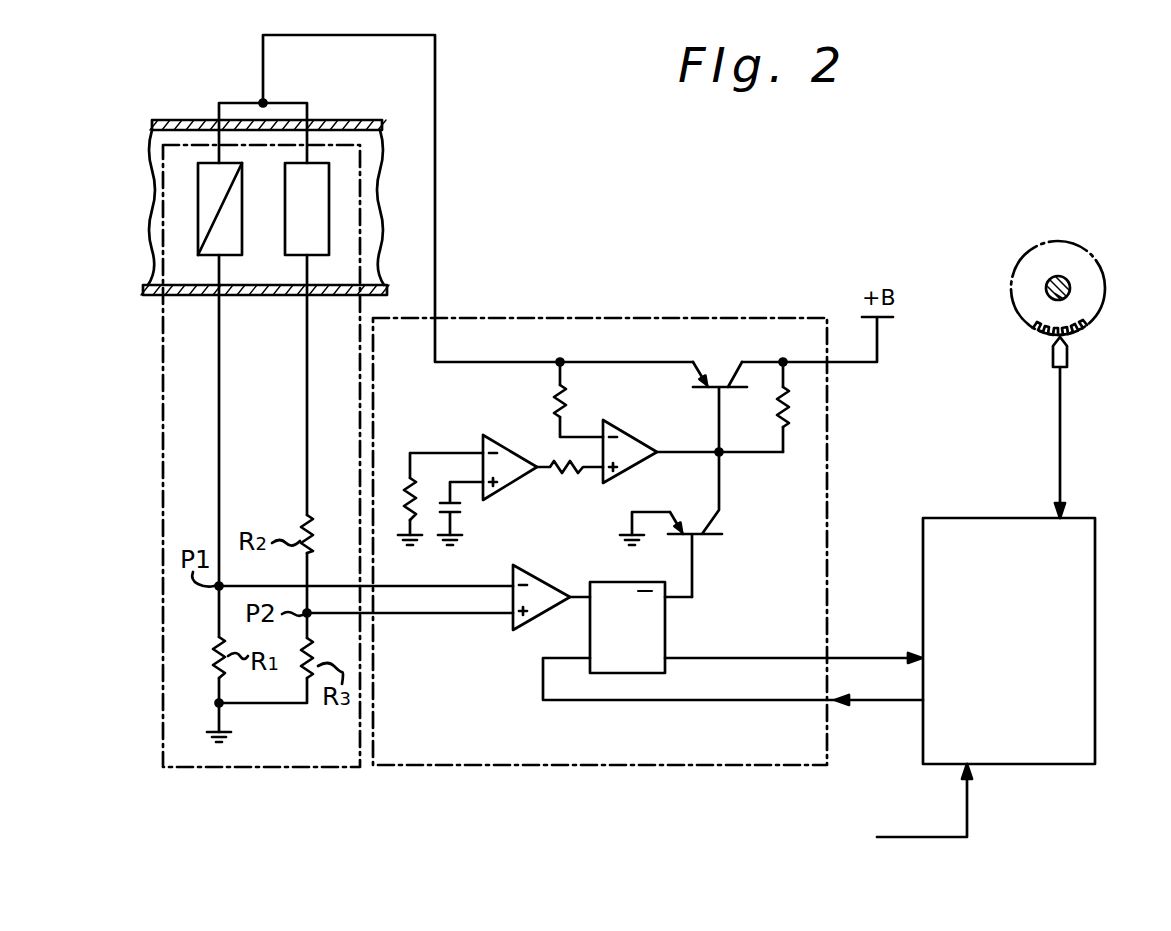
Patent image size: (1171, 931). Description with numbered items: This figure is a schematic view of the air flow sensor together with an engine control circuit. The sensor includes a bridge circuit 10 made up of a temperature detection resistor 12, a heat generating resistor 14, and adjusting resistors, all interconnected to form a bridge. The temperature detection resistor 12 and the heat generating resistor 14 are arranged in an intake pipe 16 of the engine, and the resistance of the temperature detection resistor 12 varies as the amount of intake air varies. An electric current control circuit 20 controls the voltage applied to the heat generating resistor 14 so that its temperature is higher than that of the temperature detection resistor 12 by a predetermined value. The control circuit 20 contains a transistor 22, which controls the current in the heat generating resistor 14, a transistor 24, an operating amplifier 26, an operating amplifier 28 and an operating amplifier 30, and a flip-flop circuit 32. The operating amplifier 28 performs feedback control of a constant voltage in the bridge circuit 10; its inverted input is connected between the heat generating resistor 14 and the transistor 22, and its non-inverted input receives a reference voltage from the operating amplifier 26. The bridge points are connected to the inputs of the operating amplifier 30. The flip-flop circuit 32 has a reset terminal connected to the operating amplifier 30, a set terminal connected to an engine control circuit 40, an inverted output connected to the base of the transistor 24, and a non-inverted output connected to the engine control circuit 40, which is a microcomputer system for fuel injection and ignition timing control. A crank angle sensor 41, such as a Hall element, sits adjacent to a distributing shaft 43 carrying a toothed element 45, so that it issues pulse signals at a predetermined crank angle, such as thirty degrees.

The bridge circuit 10 is at (163, 712).
The temperature detection resistor 12 is at (198, 212).
The heat generating resistor 14 is at (329, 210).
The intake pipe 16 is at (340, 120).
The electric current control circuit 20 is at (567, 765).
The transistor 22 is at (723, 392).
The transistor 24 is at (697, 538).
The operating amplifier 26 is at (517, 450).
The operating amplifier 28 is at (630, 424).
The operating amplifier 30 is at (545, 581).
The flip-flop circuit 32 is at (665, 629).
The engine control circuit 40 is at (997, 518).
The crank angle sensor 41 is at (1067, 360).
The distributing shaft 43 is at (1070, 290).
The toothed element 45 is at (1085, 330).